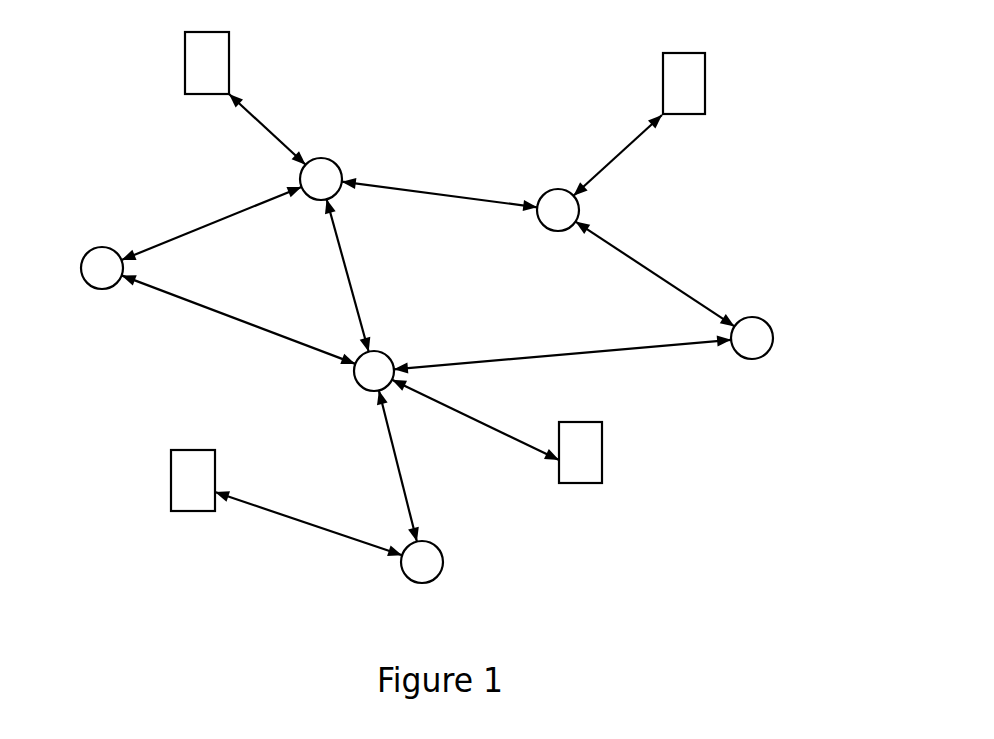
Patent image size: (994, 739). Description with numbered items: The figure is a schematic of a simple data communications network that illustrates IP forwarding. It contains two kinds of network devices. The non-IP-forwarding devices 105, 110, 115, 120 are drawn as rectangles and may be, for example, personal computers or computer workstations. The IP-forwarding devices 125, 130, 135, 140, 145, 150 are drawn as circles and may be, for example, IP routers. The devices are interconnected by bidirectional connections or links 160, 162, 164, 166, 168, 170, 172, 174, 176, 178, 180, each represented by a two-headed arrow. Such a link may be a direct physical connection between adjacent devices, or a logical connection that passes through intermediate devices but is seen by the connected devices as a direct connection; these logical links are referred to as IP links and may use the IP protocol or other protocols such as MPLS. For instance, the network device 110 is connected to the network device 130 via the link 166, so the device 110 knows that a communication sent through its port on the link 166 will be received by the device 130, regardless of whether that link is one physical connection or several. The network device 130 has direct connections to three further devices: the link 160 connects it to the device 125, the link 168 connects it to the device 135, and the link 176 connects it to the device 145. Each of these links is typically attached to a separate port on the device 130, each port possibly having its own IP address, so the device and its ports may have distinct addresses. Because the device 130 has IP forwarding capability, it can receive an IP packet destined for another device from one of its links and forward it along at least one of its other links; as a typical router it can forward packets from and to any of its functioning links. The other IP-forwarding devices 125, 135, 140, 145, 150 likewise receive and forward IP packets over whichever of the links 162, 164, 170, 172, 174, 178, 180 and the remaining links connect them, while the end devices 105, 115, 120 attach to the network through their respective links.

The non-IP-forwarding device 105 is at (171, 502).
The non-IP-forwarding device 110 is at (185, 51).
The non-IP-forwarding device 115 is at (705, 79).
The non-IP-forwarding device 120 is at (602, 463).
The IP-forwarding device 125 is at (80, 270).
The IP-forwarding device 130 is at (326, 157).
The IP-forwarding device 135 is at (380, 353).
The IP-forwarding device 140 is at (443, 562).
The IP-forwarding device 145 is at (556, 188).
The IP-forwarding device 150 is at (773, 343).
The link 160 is at (215, 218).
The link 162 is at (227, 322).
The link 164 is at (272, 510).
The link 166 is at (266, 118).
The link 168 is at (333, 243).
The link 170 is at (388, 443).
The link 172 is at (460, 415).
The link 174 is at (540, 353).
The link 176 is at (425, 189).
The link 178 is at (619, 152).
The link 180 is at (647, 262).